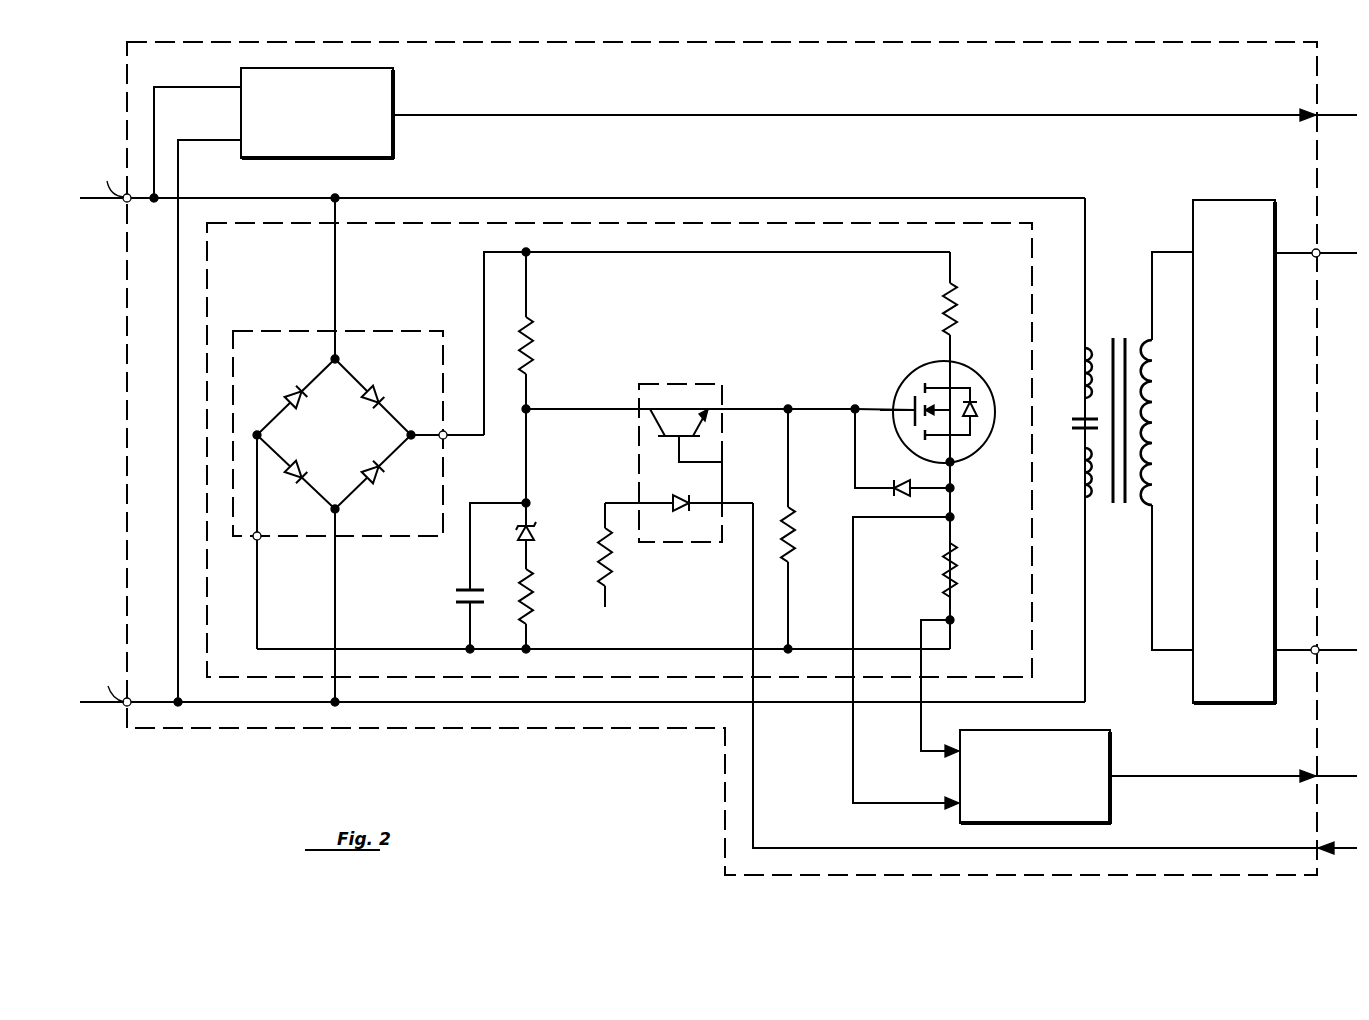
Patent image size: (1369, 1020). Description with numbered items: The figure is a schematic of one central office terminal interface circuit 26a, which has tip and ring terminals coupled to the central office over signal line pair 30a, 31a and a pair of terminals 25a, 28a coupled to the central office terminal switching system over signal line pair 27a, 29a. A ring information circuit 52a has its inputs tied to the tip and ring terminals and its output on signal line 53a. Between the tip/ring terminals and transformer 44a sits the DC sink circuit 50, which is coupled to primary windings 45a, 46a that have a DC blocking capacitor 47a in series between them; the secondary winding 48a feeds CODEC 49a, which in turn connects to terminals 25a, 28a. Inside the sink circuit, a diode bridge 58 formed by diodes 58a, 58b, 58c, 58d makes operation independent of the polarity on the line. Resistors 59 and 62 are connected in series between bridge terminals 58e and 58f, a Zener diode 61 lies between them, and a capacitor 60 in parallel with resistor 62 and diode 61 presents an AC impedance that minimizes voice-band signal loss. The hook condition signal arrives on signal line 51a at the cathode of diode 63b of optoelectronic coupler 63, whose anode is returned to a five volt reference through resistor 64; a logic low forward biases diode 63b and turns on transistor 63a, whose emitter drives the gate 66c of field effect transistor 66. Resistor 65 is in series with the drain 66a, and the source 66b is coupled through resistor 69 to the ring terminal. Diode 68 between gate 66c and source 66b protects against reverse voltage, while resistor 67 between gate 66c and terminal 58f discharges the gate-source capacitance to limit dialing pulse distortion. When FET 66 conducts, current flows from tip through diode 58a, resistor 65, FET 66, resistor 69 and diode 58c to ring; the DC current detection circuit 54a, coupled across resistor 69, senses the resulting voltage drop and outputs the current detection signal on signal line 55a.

The central office terminal interface circuit 26a is at (1075, 44).
The ring information circuit 52a is at (395, 82).
The signal line 53a is at (553, 115).
The signal line 30a is at (104, 200).
The signal line 31a is at (110, 703).
The DC sink circuit 50 is at (1034, 270).
The diode bridge arrangement 58 is at (405, 331).
The diode 58a is at (378, 392).
The diode 58b is at (379, 477).
The diode 58c is at (297, 478).
The diode 58d is at (296, 391).
The terminal of diode bridge 58e is at (446, 434).
The terminal of diode bridge 58f is at (259, 539).
The resistor 59 is at (540, 326).
The capacitor 60 is at (455, 599).
The Zener diode 61 is at (535, 528).
The resistor 62 is at (535, 623).
The optoelectronic coupler device 63 is at (681, 382).
The transistor 63a is at (679, 425).
The diode 63b is at (686, 510).
The resistor 64 is at (601, 569).
The resistor 65 is at (958, 292).
The field effect transistor 66 is at (906, 372).
The drain 66a is at (955, 362).
The source 66b is at (952, 465).
The gate 66c is at (893, 410).
The resistor 67 is at (797, 517).
The diode 68 is at (906, 483).
The resistor 69 is at (958, 552).
The transformer 44a is at (1110, 421).
The primary winding 45a is at (1078, 373).
The primary winding 46a is at (1080, 478).
The capacitor 47a is at (1070, 423).
The secondary winding 48a is at (1148, 438).
The CODEC 49a is at (1215, 200).
The terminal 25a is at (1318, 250).
The signal line 27a is at (1340, 256).
The terminal 28a is at (1318, 647).
The signal line 29a is at (1338, 654).
The DC current detection circuit 54a is at (1112, 752).
The signal line 55a is at (1168, 776).
The signal line 51a is at (788, 848).